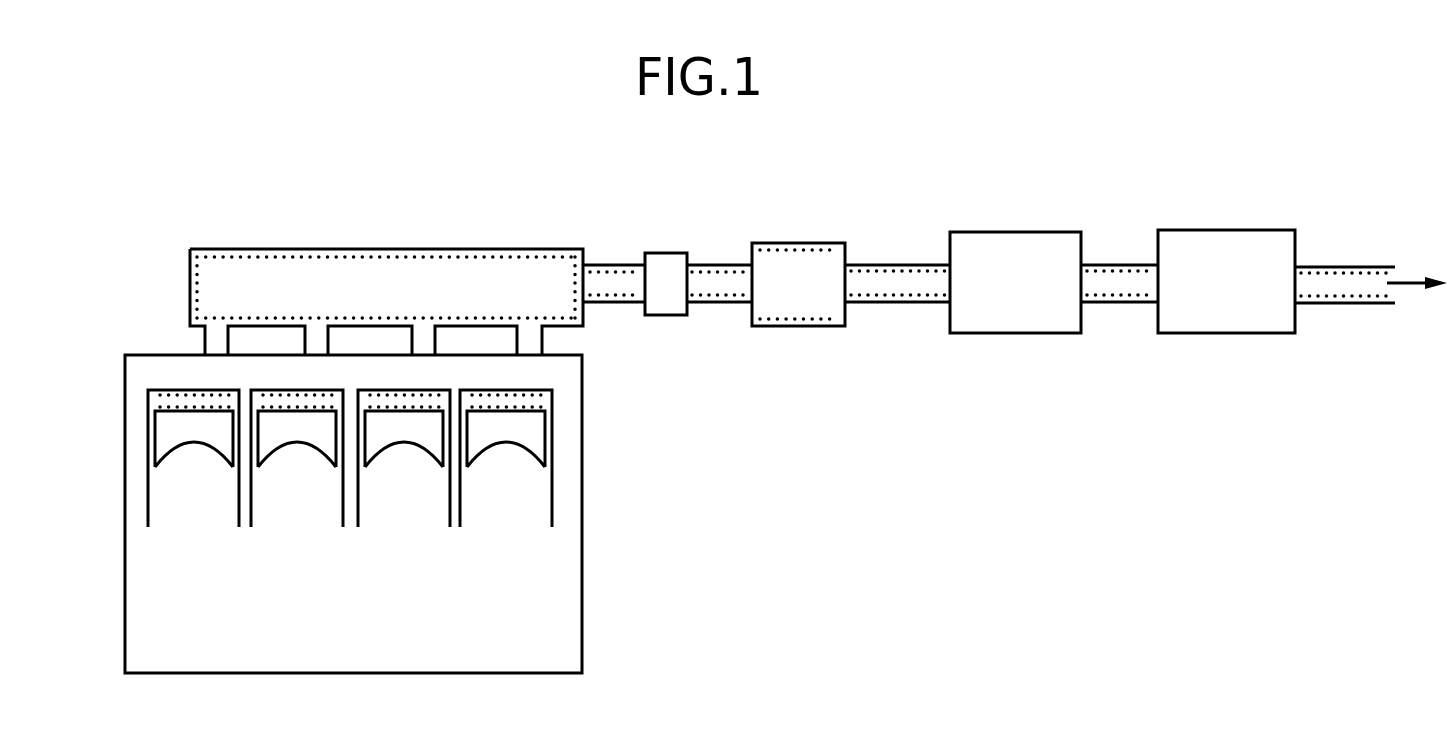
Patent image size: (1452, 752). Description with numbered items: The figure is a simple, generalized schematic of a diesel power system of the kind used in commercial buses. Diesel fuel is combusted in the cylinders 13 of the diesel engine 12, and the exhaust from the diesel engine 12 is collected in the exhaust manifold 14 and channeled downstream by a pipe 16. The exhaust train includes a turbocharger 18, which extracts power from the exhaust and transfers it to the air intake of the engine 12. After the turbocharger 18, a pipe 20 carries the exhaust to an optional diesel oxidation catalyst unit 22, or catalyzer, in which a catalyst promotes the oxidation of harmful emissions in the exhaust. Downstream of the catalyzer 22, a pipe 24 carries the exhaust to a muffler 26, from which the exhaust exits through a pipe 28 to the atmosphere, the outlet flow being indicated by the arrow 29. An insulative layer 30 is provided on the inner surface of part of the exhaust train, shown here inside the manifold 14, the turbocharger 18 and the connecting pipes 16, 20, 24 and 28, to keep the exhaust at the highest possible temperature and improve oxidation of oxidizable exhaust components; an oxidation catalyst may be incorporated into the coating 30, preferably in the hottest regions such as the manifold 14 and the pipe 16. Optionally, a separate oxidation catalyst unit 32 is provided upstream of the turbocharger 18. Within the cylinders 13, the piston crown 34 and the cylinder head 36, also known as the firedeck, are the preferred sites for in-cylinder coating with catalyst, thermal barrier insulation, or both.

The diesel engine 12 is at (520, 630).
The cylinders 13 is at (500, 498).
The exhaust manifold 14 is at (503, 287).
The pipe 16 is at (598, 292).
The turbocharger 18 is at (798, 277).
The pipe 20 is at (890, 282).
The diesel oxidation catalyst unit 22 is at (1022, 253).
The pipe 24 is at (1110, 278).
The muffler 26 is at (1210, 258).
The pipe 28 is at (1333, 282).
The exhaust gas outlet flow 29 is at (1403, 288).
The insulative layer 30 is at (373, 257).
The oxidation catalyst unit 32 is at (658, 270).
The piston crown 34 is at (512, 405).
The cylinder head 36 is at (513, 393).